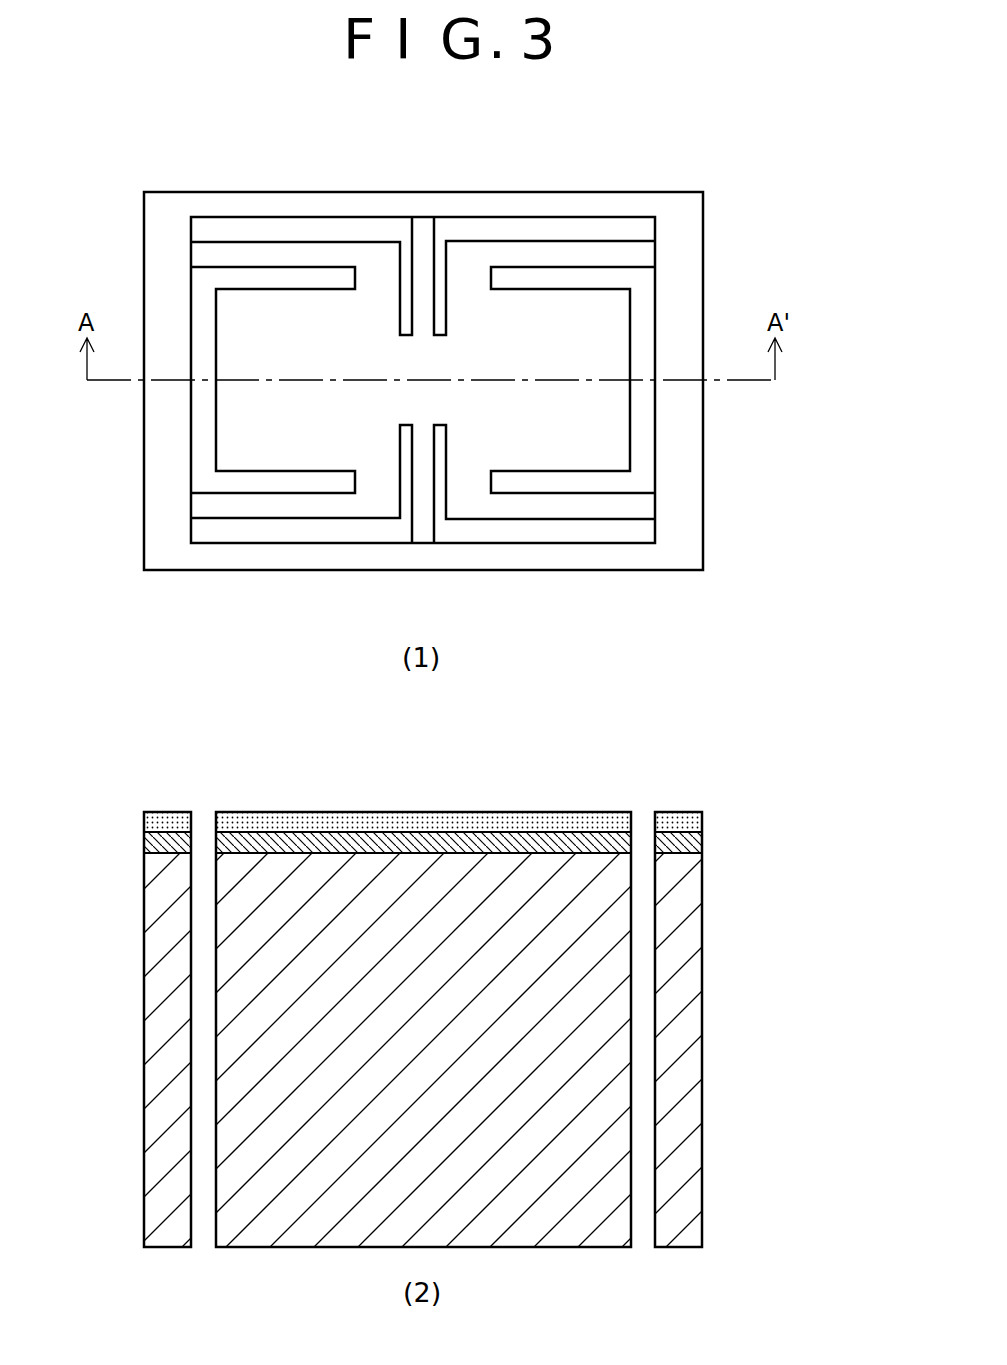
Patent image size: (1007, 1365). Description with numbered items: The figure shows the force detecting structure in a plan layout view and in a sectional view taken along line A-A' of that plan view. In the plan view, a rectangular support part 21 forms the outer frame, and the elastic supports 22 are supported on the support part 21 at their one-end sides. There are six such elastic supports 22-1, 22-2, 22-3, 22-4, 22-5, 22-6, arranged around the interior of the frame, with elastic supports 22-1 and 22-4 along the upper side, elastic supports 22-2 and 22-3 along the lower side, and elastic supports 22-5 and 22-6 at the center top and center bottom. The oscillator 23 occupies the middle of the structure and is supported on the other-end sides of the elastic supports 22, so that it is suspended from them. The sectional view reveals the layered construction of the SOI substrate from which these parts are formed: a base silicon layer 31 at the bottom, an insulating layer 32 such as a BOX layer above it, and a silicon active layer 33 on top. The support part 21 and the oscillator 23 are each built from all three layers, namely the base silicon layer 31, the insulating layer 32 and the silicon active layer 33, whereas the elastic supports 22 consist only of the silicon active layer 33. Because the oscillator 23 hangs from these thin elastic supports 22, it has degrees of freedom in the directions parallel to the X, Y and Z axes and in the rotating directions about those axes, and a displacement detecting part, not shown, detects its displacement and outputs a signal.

The support part 21 is at (688, 252).
The elastic supports 22 is at (446, 380).
The elastic support 22-1 is at (560, 254).
The elastic support 22-2 is at (613, 507).
The elastic support 22-3 is at (255, 510).
The elastic support 22-4 is at (245, 252).
The elastic support 22-5 is at (423, 276).
The elastic support 22-6 is at (422, 497).
The oscillator 23 is at (575, 355).
The base silicon layer 31 is at (690, 1020).
The insulating layer 32 is at (690, 843).
The silicon active layer 33 is at (683, 820).